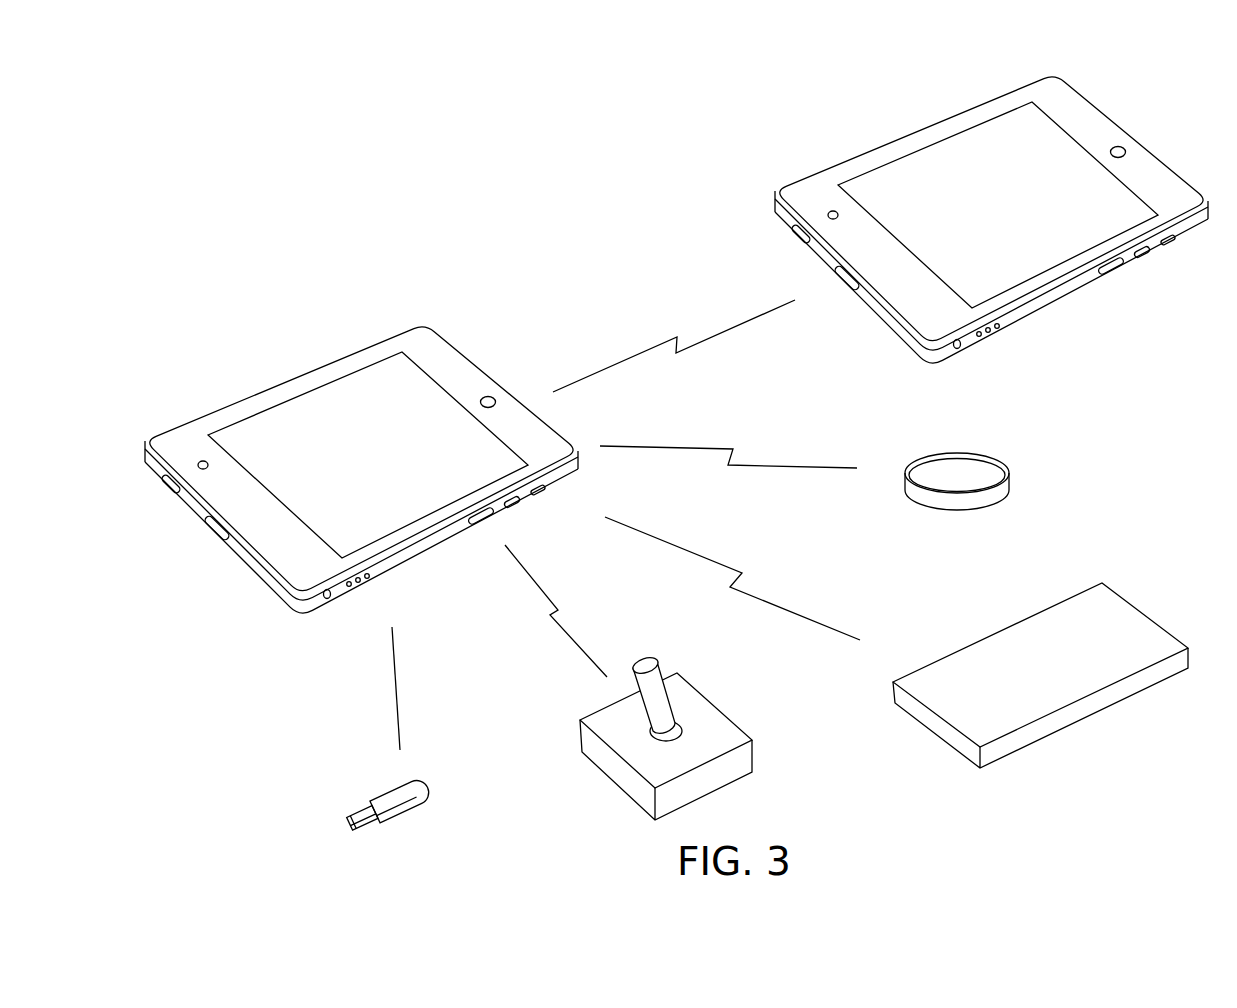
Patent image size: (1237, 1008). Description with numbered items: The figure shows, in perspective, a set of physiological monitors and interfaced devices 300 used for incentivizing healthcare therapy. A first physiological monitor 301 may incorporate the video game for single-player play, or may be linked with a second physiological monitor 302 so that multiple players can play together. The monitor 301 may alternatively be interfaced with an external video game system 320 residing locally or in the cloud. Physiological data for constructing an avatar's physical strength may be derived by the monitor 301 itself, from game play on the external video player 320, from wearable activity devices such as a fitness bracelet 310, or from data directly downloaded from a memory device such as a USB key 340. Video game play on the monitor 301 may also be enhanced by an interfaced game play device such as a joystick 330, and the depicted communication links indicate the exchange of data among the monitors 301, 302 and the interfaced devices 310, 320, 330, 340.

The gaming system 300 is at (622, 113).
The physiological monitor 301 is at (221, 408).
The linked physiological monitor 302 is at (845, 160).
The fitness bracelet 310 is at (970, 450).
The external video game system 320 is at (1125, 603).
The joystick controller 330 is at (702, 700).
The USB key 340 is at (418, 778).